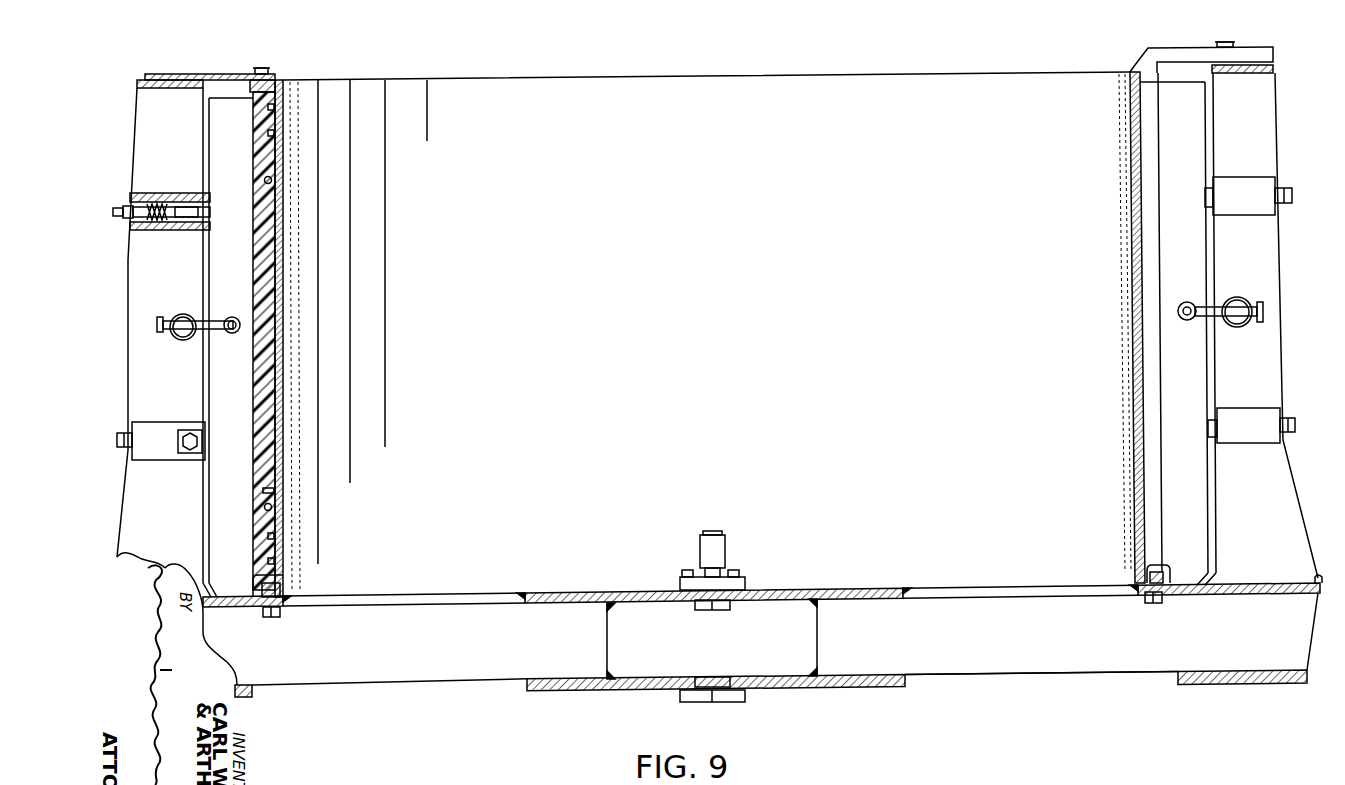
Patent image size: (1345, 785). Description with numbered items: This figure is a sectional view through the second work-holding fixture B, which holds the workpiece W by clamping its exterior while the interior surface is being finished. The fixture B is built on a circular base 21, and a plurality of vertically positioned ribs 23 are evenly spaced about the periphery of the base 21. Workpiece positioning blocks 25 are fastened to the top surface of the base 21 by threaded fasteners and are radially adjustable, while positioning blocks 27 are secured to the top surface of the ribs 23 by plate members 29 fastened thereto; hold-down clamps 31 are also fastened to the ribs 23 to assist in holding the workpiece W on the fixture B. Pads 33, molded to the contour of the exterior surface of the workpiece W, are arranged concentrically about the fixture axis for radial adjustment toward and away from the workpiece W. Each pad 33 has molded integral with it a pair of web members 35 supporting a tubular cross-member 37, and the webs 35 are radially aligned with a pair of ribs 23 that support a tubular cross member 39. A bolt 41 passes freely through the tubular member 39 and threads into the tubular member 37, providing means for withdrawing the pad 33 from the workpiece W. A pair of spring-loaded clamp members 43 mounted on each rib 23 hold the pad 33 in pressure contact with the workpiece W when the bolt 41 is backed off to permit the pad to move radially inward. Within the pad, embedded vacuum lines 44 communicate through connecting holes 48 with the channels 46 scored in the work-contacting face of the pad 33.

The circular base 21 is at (375, 663).
The rib 23 is at (181, 383).
The workpiece positioning block 25 is at (276, 590).
The positioning block 27 is at (272, 84).
The plate member 29 is at (243, 74).
The hold-down clamp 31 is at (1271, 53).
The pad 33 is at (284, 248).
The web member 35 is at (258, 306).
The tubular cross-member 37 is at (238, 333).
The tubular cross member 39 is at (172, 312).
The bolt 41 is at (215, 330).
The spring-loaded clamp member 43 is at (185, 233).
The vacuum line 44 is at (274, 490).
The channel 46 is at (273, 133).
The connecting hole 48 is at (272, 181).
The workpiece W is at (286, 435).
The second work-holding fixture B is at (982, 675).